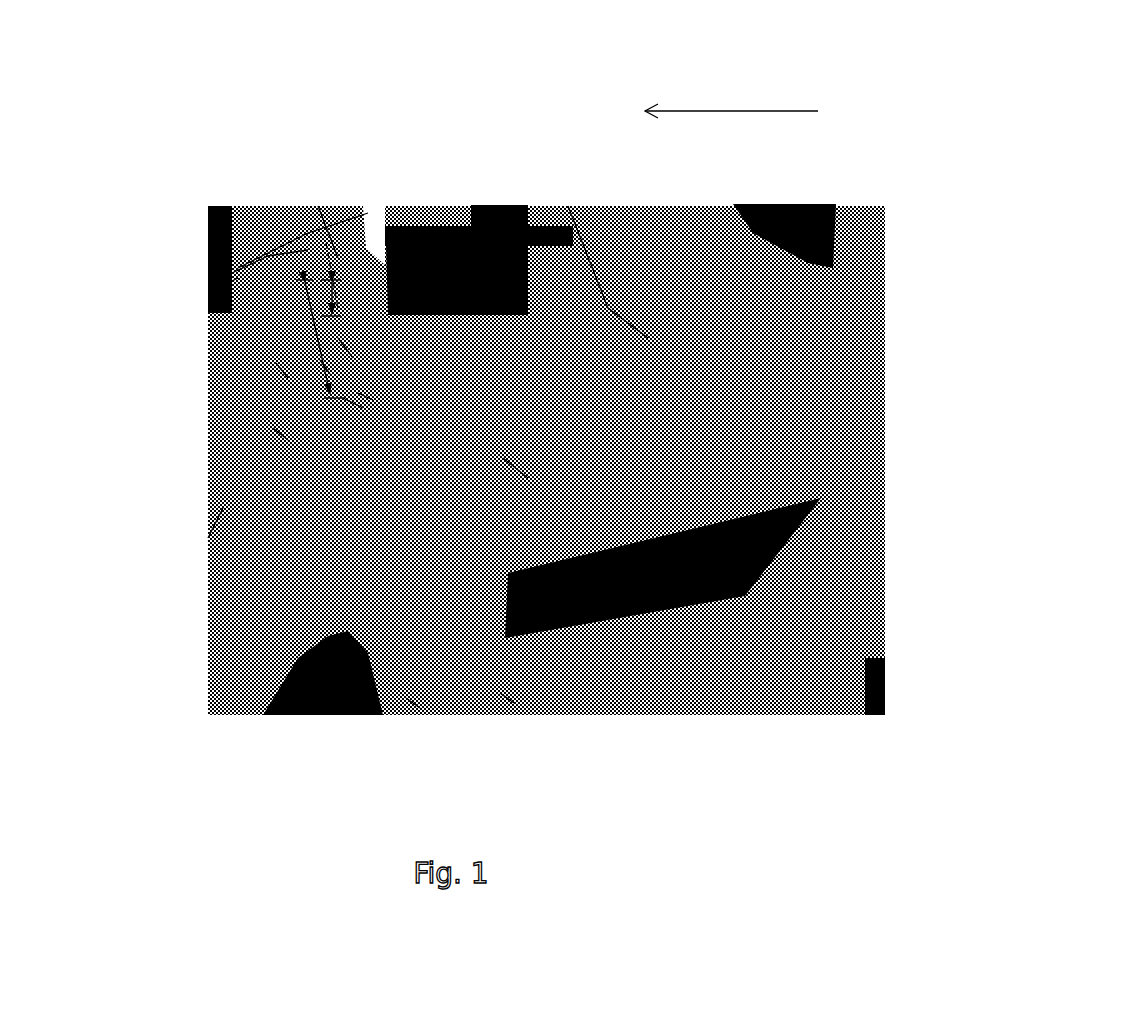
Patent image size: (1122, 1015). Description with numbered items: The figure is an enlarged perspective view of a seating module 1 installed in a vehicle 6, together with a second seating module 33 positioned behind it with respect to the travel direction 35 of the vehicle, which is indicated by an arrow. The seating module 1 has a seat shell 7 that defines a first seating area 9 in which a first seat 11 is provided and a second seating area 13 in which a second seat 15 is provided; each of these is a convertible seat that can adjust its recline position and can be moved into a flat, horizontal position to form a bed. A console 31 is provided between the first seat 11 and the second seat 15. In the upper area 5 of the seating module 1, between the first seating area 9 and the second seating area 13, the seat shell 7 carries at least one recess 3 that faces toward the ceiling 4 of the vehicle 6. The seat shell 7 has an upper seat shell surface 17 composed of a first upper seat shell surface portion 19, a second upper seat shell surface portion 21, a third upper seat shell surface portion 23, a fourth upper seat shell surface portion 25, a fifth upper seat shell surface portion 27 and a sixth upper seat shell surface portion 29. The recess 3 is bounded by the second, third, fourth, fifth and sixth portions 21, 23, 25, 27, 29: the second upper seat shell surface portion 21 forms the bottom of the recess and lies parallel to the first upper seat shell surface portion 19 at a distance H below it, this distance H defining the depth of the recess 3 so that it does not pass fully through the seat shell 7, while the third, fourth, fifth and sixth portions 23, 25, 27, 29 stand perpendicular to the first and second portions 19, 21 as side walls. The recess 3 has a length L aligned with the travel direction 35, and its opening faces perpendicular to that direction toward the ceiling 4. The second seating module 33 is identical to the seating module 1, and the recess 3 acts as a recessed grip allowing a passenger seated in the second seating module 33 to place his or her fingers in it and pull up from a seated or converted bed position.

The seating module 1 is at (355, 212).
The recess 3 is at (363, 318).
The ceiling 4 is at (318, 235).
The upper area 5 is at (357, 395).
The vehicle 6 is at (314, 195).
The seat shell 7 is at (499, 692).
The first seating area 9 is at (292, 212).
The first seat 11 is at (218, 265).
The second seating area 13 is at (405, 695).
The second seat 15 is at (318, 676).
The upper seat shell surface 17 is at (272, 425).
The first upper seat shell surface portion 19 is at (273, 361).
The second upper seat shell surface portion 21 is at (333, 340).
The third upper seat shell surface portion 23 is at (513, 612).
The fourth upper seat shell surface portion 25 is at (317, 358).
The fifth upper seat shell surface portion 27 is at (308, 275).
The sixth upper seat shell surface portion 29 is at (343, 394).
The console 31 is at (200, 523).
The second seating module 33 is at (598, 217).
The travel direction 35 is at (730, 103).
The distance H is at (308, 293).
The length L is at (300, 320).